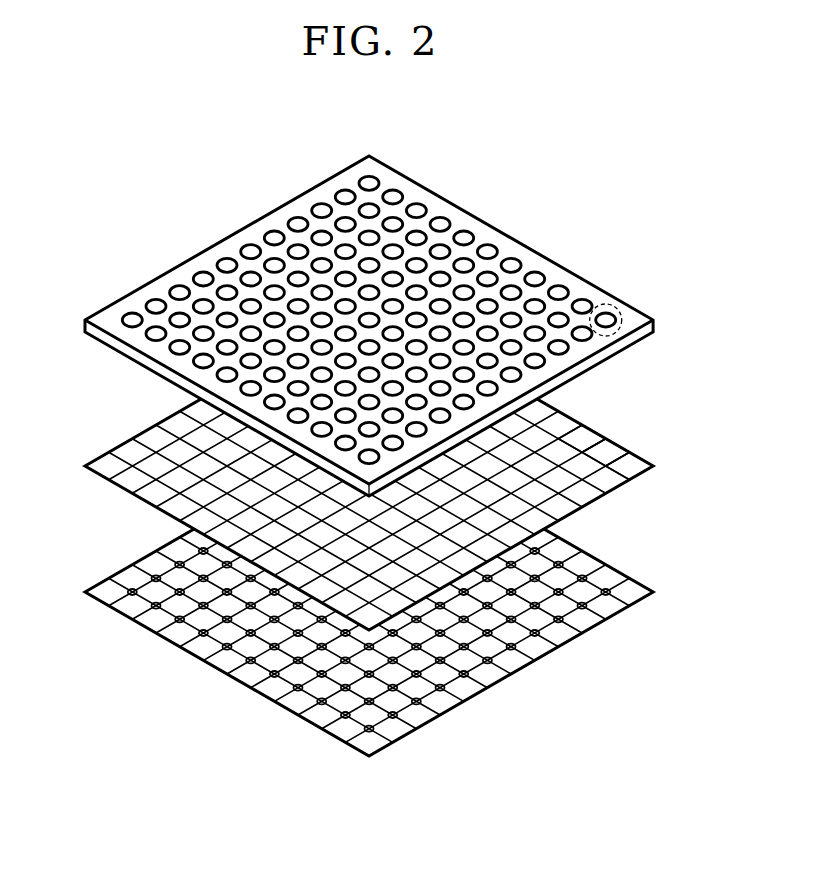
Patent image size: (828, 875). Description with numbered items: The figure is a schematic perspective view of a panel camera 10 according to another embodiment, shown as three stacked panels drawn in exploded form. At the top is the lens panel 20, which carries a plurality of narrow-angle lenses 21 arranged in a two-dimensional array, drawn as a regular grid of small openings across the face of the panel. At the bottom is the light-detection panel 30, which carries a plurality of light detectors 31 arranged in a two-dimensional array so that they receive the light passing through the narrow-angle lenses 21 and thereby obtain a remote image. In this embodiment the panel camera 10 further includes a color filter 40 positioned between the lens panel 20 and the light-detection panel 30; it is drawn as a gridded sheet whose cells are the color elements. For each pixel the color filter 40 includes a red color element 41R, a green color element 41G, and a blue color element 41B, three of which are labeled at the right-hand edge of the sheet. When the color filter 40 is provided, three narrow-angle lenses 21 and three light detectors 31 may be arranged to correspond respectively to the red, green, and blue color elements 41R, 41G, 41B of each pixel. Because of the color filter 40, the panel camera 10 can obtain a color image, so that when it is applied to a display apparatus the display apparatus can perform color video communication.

The panel camera 10 is at (590, 196).
The lens panel 20 is at (198, 243).
The narrow-angle lenses 21 is at (443, 221).
The light-detection panel 30 is at (123, 558).
The light detectors 31 is at (444, 690).
The color filter 40 is at (123, 432).
The red (R) color element 41R is at (567, 438).
The green (G) color element 41G is at (590, 453).
The blue (B) color element 41B is at (615, 465).